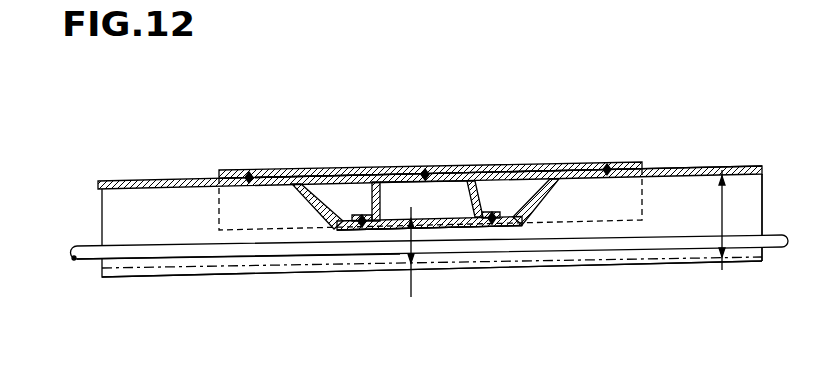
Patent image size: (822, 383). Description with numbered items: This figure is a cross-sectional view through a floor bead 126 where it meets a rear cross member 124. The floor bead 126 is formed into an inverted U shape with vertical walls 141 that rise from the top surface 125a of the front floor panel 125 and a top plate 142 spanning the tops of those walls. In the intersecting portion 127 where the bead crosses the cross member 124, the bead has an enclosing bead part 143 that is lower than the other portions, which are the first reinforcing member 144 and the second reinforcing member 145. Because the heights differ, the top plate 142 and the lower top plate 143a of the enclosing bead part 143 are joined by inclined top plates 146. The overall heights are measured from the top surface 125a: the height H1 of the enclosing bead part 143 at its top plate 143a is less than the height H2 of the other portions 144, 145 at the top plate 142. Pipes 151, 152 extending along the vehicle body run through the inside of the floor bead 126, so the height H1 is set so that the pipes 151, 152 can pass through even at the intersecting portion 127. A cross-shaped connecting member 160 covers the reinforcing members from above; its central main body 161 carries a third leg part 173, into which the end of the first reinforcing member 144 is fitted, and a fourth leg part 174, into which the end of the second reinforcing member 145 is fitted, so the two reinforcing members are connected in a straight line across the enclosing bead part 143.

The rear cross member 124 is at (483, 188).
The front floor panel 125 is at (158, 278).
The top surface of front floor panel 125a is at (203, 268).
The floor bead 126 is at (132, 232).
The intersecting portion 127 is at (380, 233).
The vertical wall of floor bead 141 is at (680, 215).
The top plate of floor bead 142 is at (705, 167).
The enclosing bead part 143 is at (452, 214).
The top plate of enclosing bead part 143a is at (432, 212).
The first reinforcing member 144 is at (148, 180).
The second reinforcing member 145 is at (664, 165).
The inclined top plate 146 is at (333, 168).
The pipe 151 is at (92, 258).
The pipe 152 is at (236, 257).
The connecting member 160 is at (219, 170).
The main body of connecting member 161 is at (400, 167).
The third leg part 173 is at (267, 165).
The fourth leg part 174 is at (602, 162).
The height of enclosing bead part H1 is at (408, 265).
The height of other portions H2 is at (742, 220).